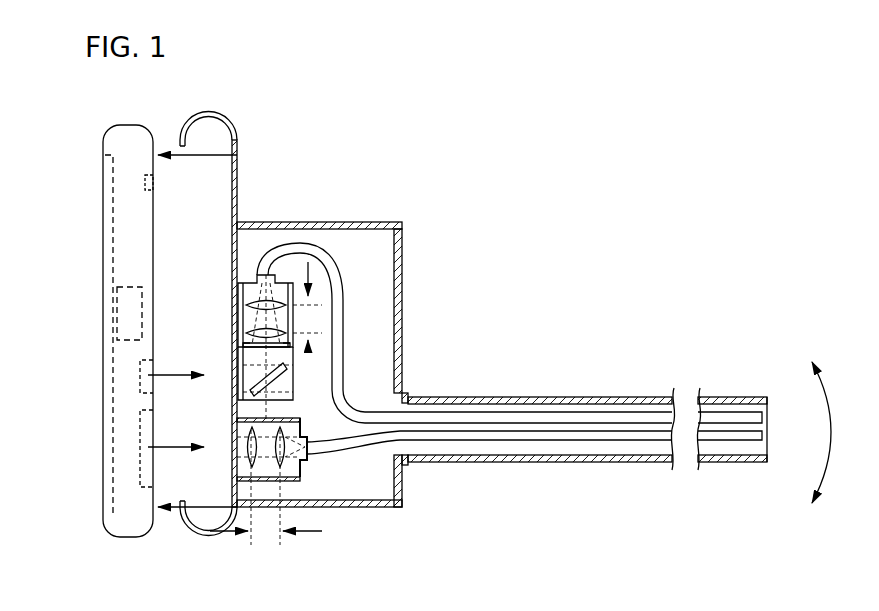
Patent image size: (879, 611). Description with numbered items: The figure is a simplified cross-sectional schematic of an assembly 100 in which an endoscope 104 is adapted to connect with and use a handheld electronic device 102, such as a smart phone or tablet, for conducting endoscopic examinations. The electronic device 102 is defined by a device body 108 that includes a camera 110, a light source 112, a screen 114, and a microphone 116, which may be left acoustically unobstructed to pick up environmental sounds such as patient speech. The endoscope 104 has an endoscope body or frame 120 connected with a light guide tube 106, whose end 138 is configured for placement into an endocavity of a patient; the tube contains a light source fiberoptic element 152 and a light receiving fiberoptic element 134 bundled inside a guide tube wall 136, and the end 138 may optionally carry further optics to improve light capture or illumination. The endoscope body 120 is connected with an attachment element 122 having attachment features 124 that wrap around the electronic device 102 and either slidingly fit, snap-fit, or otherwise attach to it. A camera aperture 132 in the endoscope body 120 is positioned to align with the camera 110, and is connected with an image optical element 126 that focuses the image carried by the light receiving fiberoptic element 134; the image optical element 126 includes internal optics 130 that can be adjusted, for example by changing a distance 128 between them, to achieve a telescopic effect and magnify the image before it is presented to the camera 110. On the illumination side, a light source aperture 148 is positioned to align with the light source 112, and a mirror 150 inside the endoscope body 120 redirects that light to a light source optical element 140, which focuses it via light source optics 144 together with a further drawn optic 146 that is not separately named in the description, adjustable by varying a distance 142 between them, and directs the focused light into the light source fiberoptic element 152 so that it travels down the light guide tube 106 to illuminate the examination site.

The assembly 100 is at (518, 178).
The electronic device 102 is at (92, 532).
The endoscope 104 is at (388, 538).
The light guide tube 106 is at (117, 318).
The device body 108 is at (147, 248).
The camera 110 is at (140, 425).
The light source 112 is at (140, 368).
The screen 114 is at (103, 283).
The microphone 116 is at (145, 183).
The endoscope body 120 is at (403, 237).
The attachment element 122 is at (236, 160).
The attachment features 124 is at (217, 113).
The image optical element 126 is at (320, 480).
The distance 128 is at (262, 536).
The internal optics 130 is at (265, 420).
The camera aperture 132 is at (240, 425).
The light receiving fiberoptic element 134 is at (392, 444).
The guide tube wall 136 is at (462, 397).
The end of the light guide tube 138 is at (780, 414).
The light source optical element 140 is at (240, 283).
The distance 142 is at (313, 280).
The light source optics 144 is at (243, 305).
The second lens 146 is at (243, 333).
The light source aperture 148 is at (240, 360).
The mirror 150 is at (290, 383).
The light source fiberoptic element 152 is at (297, 243).